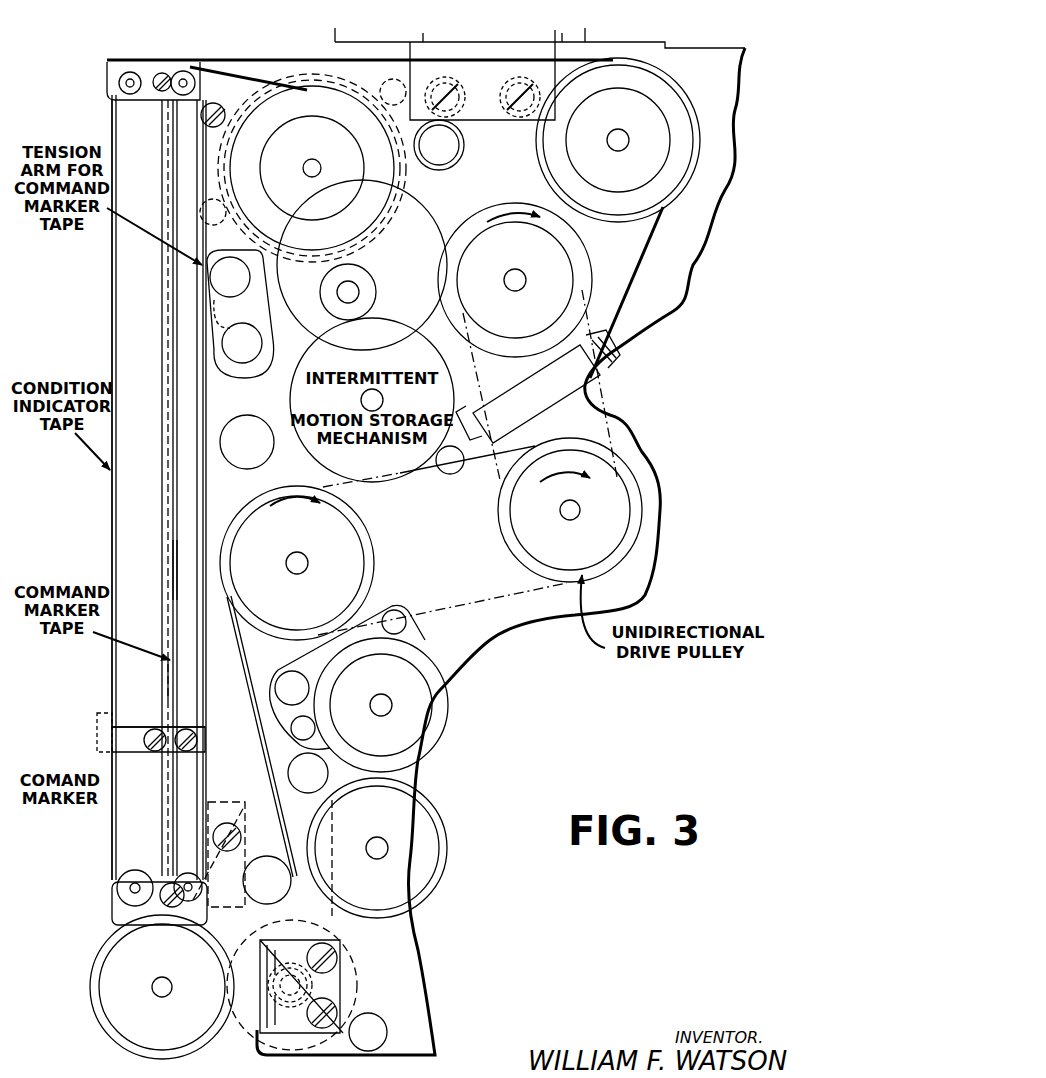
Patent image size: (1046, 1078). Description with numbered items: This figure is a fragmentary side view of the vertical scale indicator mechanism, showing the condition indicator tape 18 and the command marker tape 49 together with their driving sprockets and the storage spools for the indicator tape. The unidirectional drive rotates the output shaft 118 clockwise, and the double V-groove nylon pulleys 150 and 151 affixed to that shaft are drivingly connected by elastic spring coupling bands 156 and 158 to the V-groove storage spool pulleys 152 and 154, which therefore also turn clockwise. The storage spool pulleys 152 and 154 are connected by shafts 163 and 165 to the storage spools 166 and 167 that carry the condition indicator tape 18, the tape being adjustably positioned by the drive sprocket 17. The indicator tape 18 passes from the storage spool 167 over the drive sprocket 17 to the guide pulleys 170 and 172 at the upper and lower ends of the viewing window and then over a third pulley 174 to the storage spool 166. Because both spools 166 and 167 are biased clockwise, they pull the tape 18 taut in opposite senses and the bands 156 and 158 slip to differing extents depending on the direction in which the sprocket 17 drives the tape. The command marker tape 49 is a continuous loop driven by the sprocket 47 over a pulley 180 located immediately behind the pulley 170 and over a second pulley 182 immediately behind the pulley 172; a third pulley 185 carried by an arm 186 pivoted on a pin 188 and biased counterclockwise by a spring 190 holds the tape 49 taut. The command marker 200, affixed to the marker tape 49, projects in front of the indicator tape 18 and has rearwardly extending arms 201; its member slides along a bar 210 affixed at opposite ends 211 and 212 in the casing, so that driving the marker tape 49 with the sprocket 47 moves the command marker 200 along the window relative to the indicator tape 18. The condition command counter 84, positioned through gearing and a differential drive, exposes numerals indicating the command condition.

The drive sprocket 17 is at (614, 72).
The condition indicator tape 18 is at (108, 528).
The sprocket 47 is at (408, 197).
The command marker tape 49 is at (246, 62).
The condition command counter 84 is at (100, 1015).
The output shaft 118 is at (560, 510).
The double V-groove nylon pulley 150 is at (632, 535).
The double V-groove nylon pulley 151 is at (577, 457).
The storage spool pulley 152 is at (350, 548).
The storage spool pulley 154 is at (558, 300).
The elastic spring coupling band 156 is at (458, 605).
The elastic spring coupling band 158 is at (603, 387).
The shaft 163 is at (310, 563).
The shaft 165 is at (527, 277).
The storage spool 166 is at (352, 513).
The storage spool 167 is at (527, 210).
The guide pulley 170 is at (120, 72).
The guide pulley 172 is at (112, 893).
The third pulley 174 is at (278, 897).
The pulley 180 is at (183, 70).
The second pulley 182 is at (212, 910).
The third pulley 185 is at (222, 278).
The arm 186 is at (260, 294).
The pin 188 is at (242, 352).
The spring 190 is at (264, 360).
The command marker 200 is at (133, 752).
The rearwardly extending arms 201 is at (140, 730).
The bar 210 is at (172, 567).
The end 211 is at (157, 75).
The end 212 is at (168, 882).